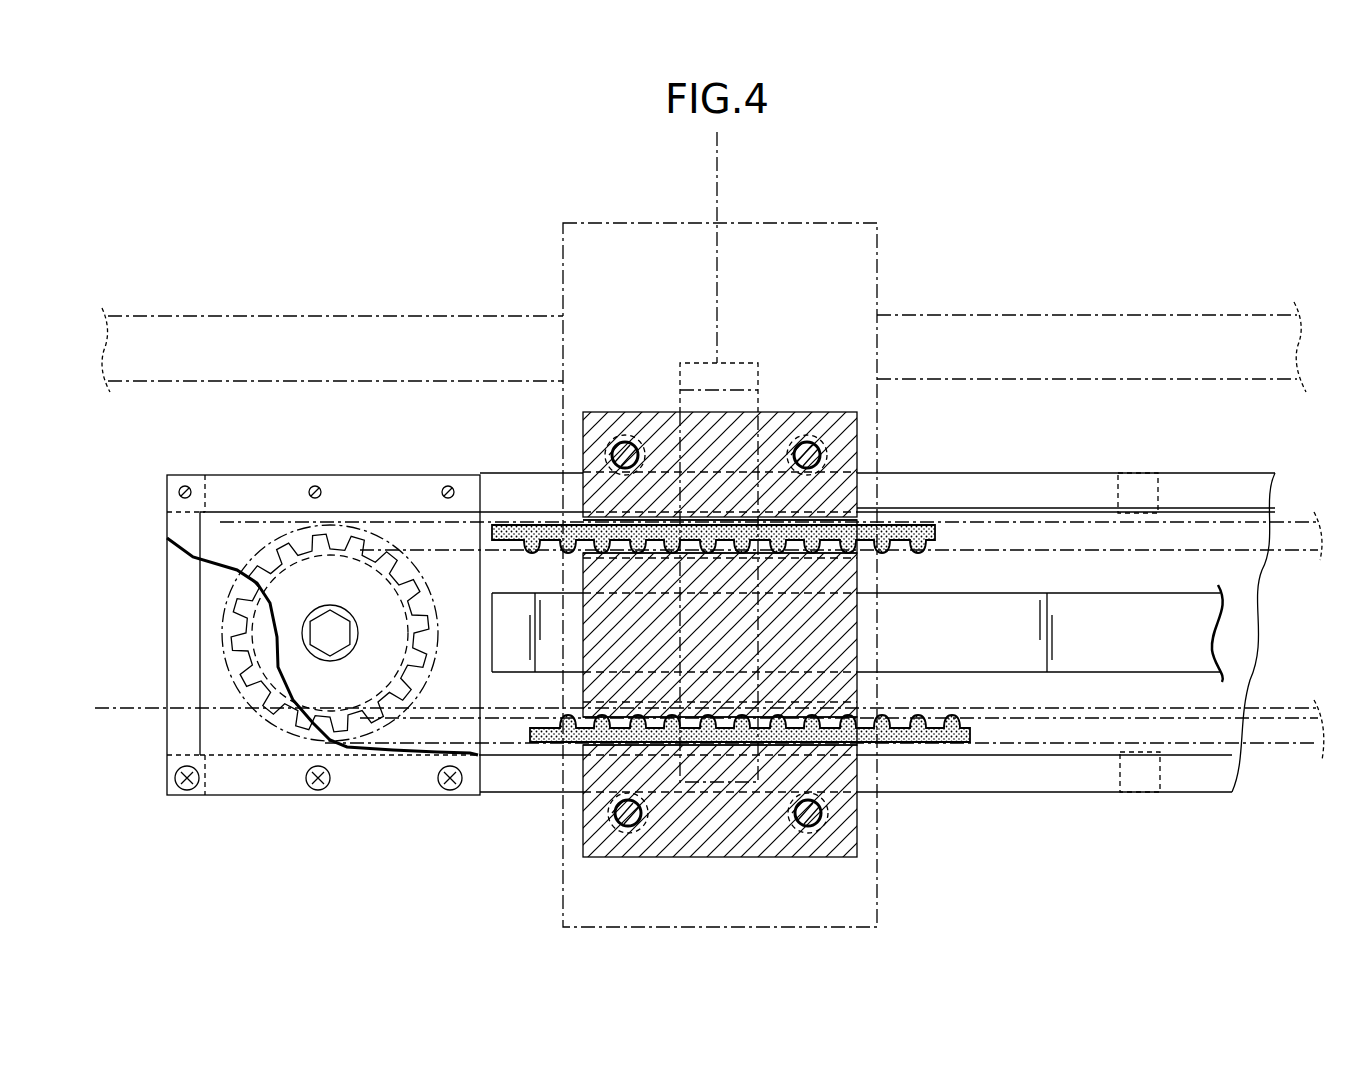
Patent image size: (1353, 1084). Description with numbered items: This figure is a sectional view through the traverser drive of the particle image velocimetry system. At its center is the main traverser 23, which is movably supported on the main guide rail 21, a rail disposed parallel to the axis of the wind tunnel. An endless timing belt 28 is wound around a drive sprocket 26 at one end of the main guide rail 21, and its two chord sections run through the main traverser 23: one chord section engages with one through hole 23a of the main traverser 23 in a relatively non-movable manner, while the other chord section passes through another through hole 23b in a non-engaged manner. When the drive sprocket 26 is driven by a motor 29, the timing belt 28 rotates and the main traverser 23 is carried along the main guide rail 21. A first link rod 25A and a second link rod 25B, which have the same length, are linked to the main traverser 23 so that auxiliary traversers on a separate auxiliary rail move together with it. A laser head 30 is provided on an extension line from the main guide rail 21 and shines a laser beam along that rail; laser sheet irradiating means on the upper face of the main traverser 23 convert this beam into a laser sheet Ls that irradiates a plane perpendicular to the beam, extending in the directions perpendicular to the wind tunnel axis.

The main guide rail 21 is at (1095, 605).
The main traverser 23 is at (583, 825).
The through hole 23a is at (850, 738).
The through hole 23b is at (857, 548).
The first link rod 25A is at (360, 316).
The second link rod 25B is at (1082, 315).
The drive sprocket 26 is at (405, 568).
The endless timing belt 28 is at (900, 527).
The motor 29 is at (430, 626).
The laser head 30 is at (678, 395).
The laser sheet Ls is at (717, 177).